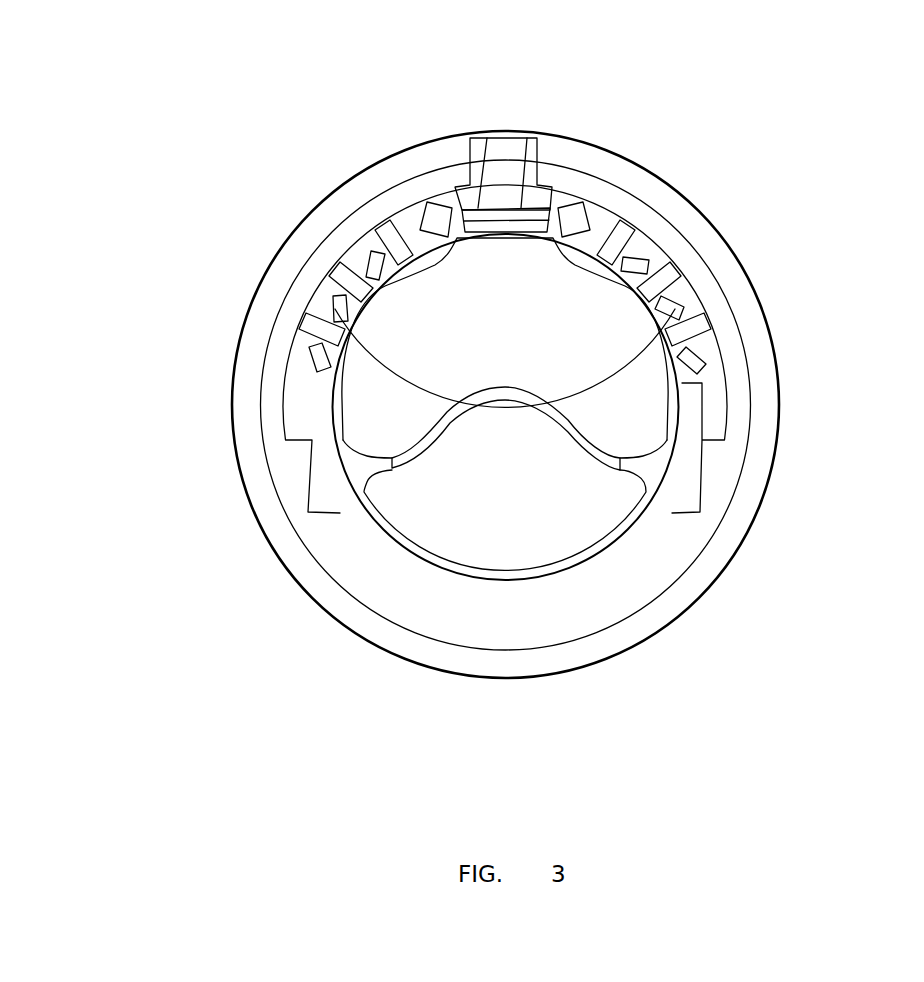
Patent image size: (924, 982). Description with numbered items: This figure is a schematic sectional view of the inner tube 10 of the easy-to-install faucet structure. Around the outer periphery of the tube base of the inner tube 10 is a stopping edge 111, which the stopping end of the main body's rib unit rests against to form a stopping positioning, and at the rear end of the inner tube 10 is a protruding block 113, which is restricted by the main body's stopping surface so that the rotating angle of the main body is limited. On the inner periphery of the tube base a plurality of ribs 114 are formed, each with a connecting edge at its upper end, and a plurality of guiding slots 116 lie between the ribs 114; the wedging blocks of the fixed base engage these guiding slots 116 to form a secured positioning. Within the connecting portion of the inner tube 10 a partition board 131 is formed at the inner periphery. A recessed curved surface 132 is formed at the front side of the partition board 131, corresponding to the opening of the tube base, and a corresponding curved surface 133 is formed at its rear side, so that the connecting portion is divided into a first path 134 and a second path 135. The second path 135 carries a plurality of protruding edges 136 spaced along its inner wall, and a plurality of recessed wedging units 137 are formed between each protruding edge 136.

The inner tube 10 is at (449, 203).
The stopping edge 111 is at (258, 337).
The protruding block 113 is at (545, 136).
The ribs 114 is at (640, 216).
The guiding slots 116 is at (660, 262).
The partition board 131 is at (603, 448).
The recessed curved surface 132 is at (543, 403).
The corresponding curved surface 133 is at (465, 394).
The first path 134 is at (450, 503).
The second path 135 is at (430, 320).
The protruding edges 136 is at (470, 162).
The recessed wedging units 137 is at (512, 208).